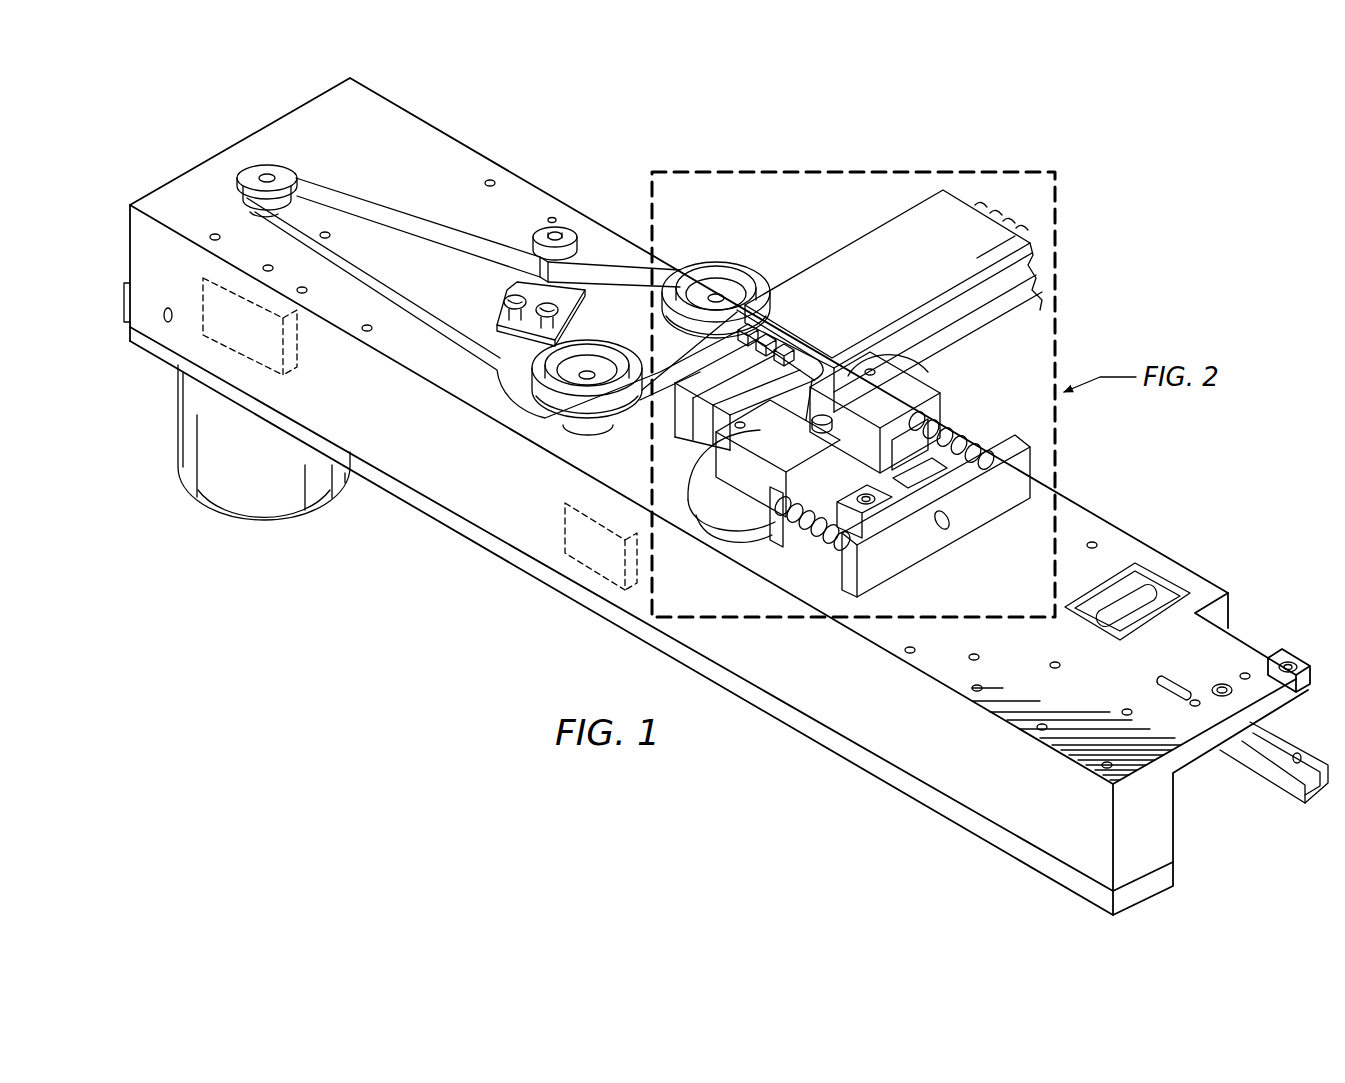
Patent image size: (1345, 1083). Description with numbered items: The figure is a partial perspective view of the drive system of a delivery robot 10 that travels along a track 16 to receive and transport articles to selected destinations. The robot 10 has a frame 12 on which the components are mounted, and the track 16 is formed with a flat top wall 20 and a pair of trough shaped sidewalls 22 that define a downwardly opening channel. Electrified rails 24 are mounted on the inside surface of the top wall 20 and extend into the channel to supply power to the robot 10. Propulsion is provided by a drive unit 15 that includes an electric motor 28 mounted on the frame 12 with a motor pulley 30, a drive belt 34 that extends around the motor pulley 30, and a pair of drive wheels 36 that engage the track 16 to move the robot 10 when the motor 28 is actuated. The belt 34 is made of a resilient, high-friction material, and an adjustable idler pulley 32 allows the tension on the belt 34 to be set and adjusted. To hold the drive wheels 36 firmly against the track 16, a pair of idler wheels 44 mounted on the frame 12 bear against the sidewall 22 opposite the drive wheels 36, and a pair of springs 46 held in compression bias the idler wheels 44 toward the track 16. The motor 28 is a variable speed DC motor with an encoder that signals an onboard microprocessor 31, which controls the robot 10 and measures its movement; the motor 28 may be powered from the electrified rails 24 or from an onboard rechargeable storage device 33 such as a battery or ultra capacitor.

The delivery robot 10 is at (1174, 150).
The frame 12 is at (510, 556).
The drive unit 15 is at (385, 181).
The track 16 is at (844, 240).
The flat top wall 20 is at (815, 276).
The trough shaped sidewalls 22 is at (985, 332).
The electrified rails 24 is at (1003, 218).
The electric motor 28 is at (264, 476).
The motor pulley 30 is at (255, 178).
The microprocessor 31 is at (297, 360).
The adjustable idler pulley 32 is at (567, 237).
The rechargeable storage device 33 is at (562, 518).
The drive belt 34 is at (448, 258).
The drive wheels 36 is at (735, 263).
The idler wheels 44 is at (925, 365).
The springs 46 is at (993, 433).